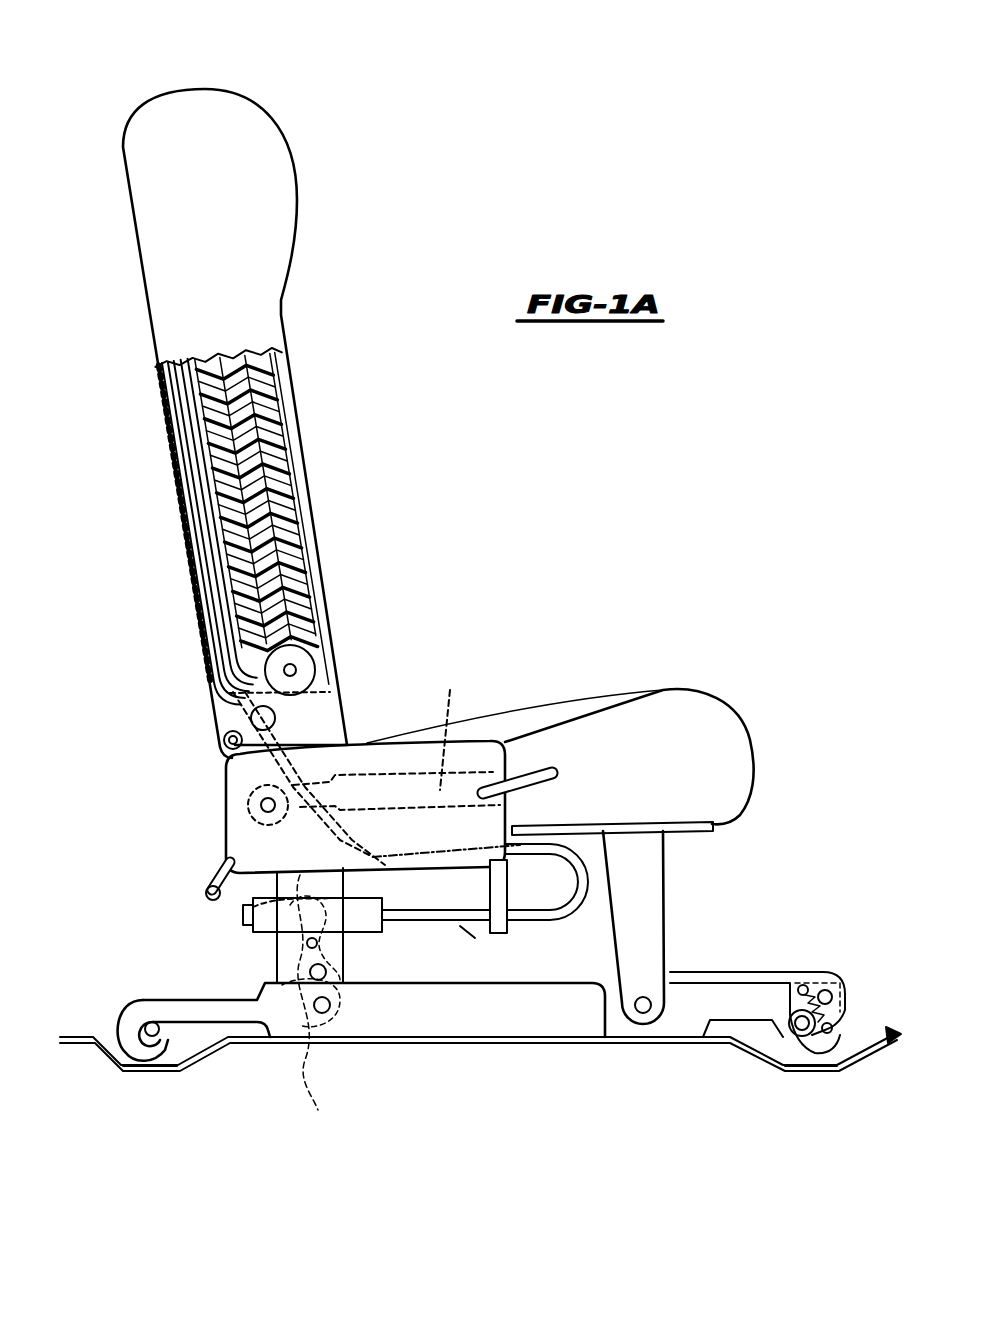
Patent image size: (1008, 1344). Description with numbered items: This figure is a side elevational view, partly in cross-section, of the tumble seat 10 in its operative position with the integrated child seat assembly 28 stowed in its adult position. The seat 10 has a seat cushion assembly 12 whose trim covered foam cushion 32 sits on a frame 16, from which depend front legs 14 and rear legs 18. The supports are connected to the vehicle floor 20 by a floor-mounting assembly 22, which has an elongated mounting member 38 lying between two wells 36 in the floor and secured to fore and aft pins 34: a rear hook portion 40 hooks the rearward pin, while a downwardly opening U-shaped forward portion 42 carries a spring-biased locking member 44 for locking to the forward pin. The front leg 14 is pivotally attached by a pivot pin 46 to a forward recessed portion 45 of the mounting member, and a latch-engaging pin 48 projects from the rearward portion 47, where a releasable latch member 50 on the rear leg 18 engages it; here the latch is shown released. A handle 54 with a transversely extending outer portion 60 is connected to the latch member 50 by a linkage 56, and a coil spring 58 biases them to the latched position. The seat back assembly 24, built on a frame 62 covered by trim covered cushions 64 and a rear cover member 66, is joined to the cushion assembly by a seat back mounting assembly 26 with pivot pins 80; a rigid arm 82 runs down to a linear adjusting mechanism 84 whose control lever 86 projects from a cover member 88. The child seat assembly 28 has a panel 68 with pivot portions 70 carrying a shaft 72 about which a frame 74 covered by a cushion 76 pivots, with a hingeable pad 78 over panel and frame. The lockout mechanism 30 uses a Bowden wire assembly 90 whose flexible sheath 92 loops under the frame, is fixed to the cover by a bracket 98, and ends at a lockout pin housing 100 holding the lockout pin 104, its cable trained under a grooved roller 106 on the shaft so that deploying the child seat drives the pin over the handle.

The tumble seat 10 is at (140, 94).
The seat cushion assembly 12 is at (762, 800).
The front legs 14 is at (655, 914).
The frame 16 is at (710, 830).
The rear legs 18 is at (300, 961).
The vehicle floor 20 is at (358, 1044).
The floor-mounting assembly 22 is at (252, 988).
The seat back assembly 24 is at (292, 294).
The seat back mounting assembly 26 is at (215, 840).
The integrated child seat assembly 28 is at (310, 469).
The lockout mechanism 30 is at (395, 904).
The foam cushion 32 is at (737, 736).
The pins 34 is at (158, 1032).
The wells 36 is at (122, 1072).
The mounting member 38 is at (490, 1046).
The rear hook portion 40 is at (132, 1010).
The U-shaped forward portion 42 is at (838, 1008).
The locking member 44 is at (775, 971).
The forward recessed portion 45 is at (705, 1070).
The pivot pin 46 is at (640, 1013).
The rearward portion 47 is at (270, 1090).
The latch-engaging pin 48 is at (330, 1007).
The latch member 50 is at (313, 995).
The handle 54 is at (208, 869).
The linkage 56 is at (250, 907).
The coil spring 58 is at (330, 934).
The outer portion 60 is at (205, 892).
The frame 62 is at (224, 740).
The trim covered cushions 64 is at (270, 326).
The rear cover member 66 is at (198, 618).
The panel 68 is at (200, 560).
The pivot portions 70 is at (240, 667).
The shaft 72 is at (300, 667).
The frame 74 is at (270, 543).
The cushion 76 is at (245, 403).
The hingeable pad 78 is at (235, 368).
The pivot pins 80 is at (270, 719).
The rigid arm 82 is at (256, 800).
The linear adjusting mechanism 84 is at (448, 726).
The control lever 86 is at (554, 771).
The cover member 88 is at (507, 748).
The Bowden wire assembly 90 is at (466, 940).
The flexible sheath 92 is at (186, 468).
The bracket 98 is at (512, 868).
The lockout pin housing 100 is at (360, 895).
The lockout pin 104 is at (243, 915).
The grooved roller 106 is at (296, 646).